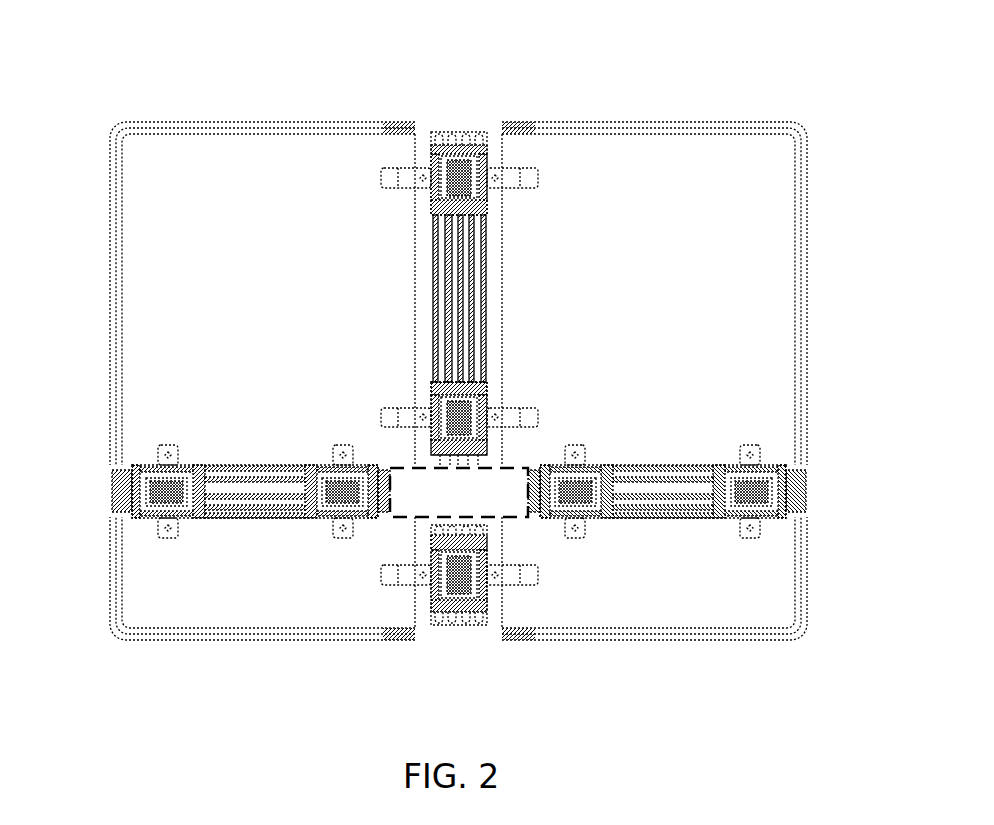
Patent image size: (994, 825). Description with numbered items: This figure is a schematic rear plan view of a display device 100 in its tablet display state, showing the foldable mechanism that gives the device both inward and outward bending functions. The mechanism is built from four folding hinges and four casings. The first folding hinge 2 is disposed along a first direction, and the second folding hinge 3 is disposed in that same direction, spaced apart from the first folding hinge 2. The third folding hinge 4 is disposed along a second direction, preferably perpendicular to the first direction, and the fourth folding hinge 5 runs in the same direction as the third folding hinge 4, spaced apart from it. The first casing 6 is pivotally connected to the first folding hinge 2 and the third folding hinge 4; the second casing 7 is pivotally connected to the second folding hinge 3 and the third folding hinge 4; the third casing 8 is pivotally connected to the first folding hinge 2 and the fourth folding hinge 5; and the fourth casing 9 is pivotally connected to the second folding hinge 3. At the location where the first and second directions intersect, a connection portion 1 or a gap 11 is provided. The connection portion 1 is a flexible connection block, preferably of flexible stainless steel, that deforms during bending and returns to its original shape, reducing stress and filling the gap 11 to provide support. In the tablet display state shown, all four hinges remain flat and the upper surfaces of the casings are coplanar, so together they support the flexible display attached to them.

The display device 100 is at (104, 57).
The connection portion 1 is at (468, 492).
The first folding hinge 2 is at (463, 258).
The second folding hinge 3 is at (465, 625).
The third folding hinge 4 is at (265, 498).
The fourth folding hinge 5 is at (693, 498).
The first casing 6 is at (215, 278).
The second casing 7 is at (210, 585).
The third casing 8 is at (722, 277).
The fourth casing 9 is at (728, 583).
The gap 11 is at (517, 463).